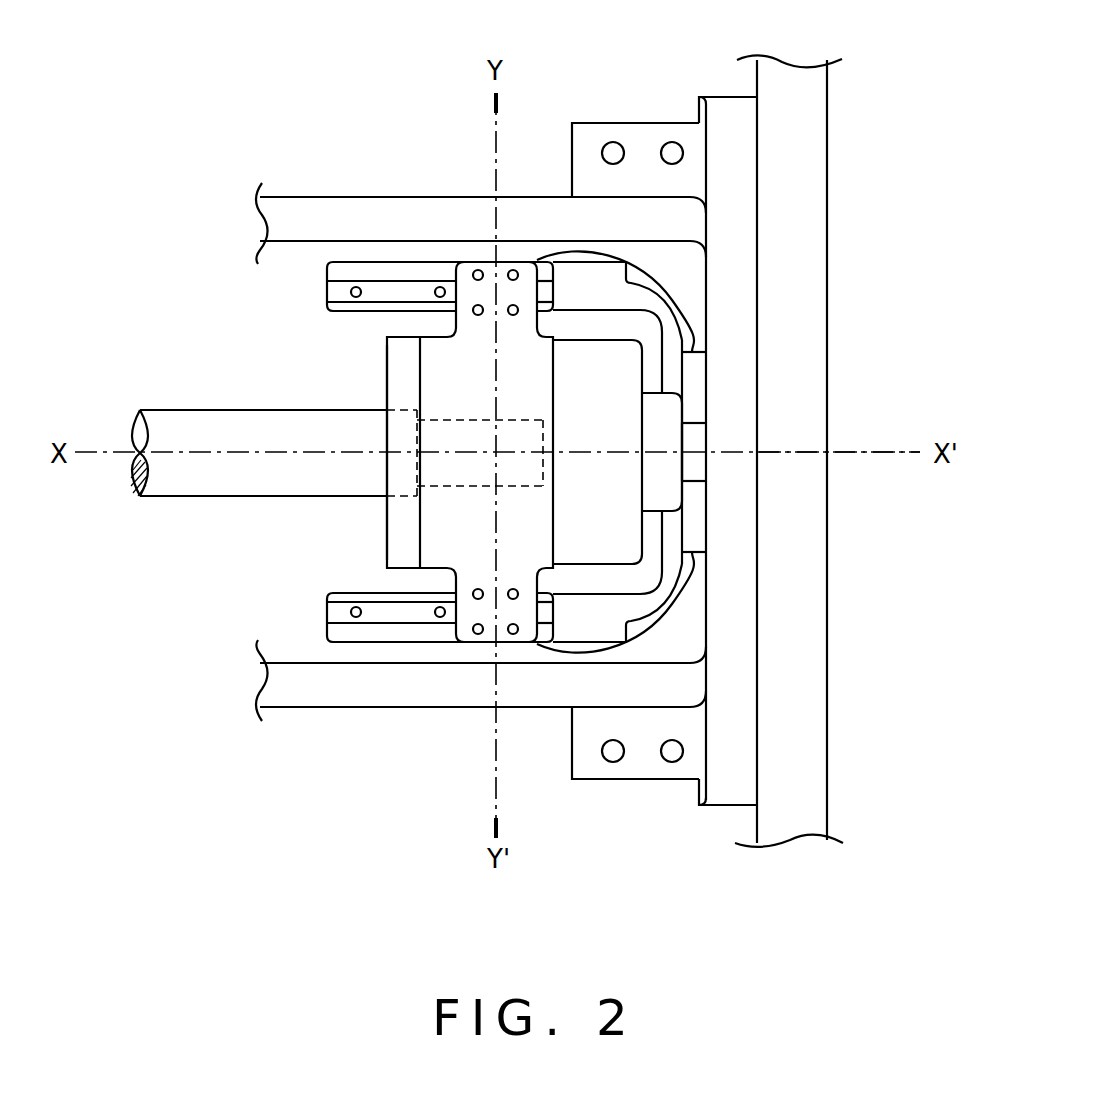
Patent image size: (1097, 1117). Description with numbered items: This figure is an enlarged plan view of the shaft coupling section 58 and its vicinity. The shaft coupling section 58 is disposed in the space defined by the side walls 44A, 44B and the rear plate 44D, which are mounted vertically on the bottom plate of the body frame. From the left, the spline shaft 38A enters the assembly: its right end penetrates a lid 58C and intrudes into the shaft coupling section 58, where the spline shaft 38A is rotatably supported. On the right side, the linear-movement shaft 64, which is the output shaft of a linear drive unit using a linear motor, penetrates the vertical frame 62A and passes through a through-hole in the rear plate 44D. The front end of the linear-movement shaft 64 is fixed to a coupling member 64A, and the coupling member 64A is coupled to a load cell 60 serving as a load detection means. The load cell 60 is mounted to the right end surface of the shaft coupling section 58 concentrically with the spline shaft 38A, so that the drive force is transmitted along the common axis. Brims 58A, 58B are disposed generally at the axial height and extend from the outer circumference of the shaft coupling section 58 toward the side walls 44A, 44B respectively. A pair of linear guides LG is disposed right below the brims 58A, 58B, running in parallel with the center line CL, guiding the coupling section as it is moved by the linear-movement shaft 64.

The spline shaft 38A is at (215, 427).
The side wall 44A is at (320, 196).
The side wall 44B is at (320, 708).
The rear plate 44D is at (728, 96).
The shaft coupling section 58 is at (437, 375).
The brim 58A is at (488, 270).
The brim 58B is at (487, 638).
The lid 58C is at (397, 523).
The load cell 60 is at (622, 535).
The vertical frame 62A is at (827, 213).
The linear-movement shaft 64 is at (697, 440).
The coupling member 64A is at (676, 498).
The linear guide LG is at (330, 292).
The center line CL is at (848, 452).